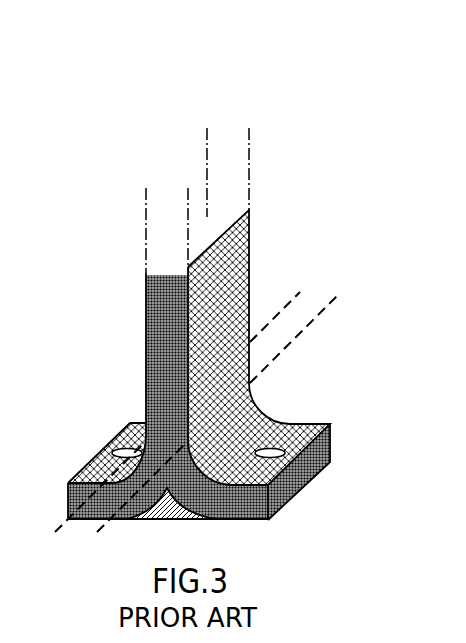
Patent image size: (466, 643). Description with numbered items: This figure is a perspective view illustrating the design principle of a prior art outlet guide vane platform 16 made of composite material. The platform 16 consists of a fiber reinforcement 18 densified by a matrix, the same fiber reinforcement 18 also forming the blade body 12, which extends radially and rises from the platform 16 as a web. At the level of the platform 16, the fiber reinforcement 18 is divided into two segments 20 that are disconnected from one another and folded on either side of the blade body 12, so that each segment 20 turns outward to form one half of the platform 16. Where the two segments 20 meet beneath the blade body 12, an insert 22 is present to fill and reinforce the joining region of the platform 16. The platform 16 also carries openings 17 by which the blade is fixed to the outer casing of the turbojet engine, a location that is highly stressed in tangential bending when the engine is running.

The blade body 12 is at (237, 181).
The external platform 16 is at (283, 411).
The holes 17 is at (110, 443).
The fiber reinforcement 18 is at (252, 354).
The segments 20 is at (73, 498).
The insert 22 is at (180, 520).